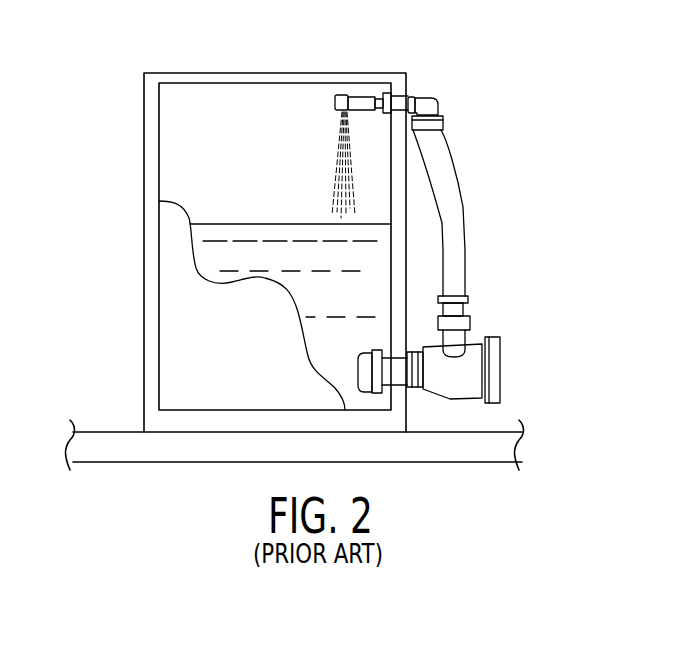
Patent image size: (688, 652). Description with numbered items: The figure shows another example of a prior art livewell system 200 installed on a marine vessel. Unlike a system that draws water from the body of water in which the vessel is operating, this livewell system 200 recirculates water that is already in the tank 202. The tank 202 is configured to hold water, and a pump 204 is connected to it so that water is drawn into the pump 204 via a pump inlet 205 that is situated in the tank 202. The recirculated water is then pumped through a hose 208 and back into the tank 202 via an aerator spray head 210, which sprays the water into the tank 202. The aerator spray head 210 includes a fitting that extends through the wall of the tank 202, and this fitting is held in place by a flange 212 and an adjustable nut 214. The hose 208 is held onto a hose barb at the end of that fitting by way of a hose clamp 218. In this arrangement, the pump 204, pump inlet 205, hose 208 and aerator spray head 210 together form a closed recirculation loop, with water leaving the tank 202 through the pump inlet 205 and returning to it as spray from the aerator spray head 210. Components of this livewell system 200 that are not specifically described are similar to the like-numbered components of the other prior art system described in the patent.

The livewell system 200 is at (483, 63).
The tank 202 is at (143, 322).
The pump 204 is at (460, 373).
The pump inlet 205 is at (359, 368).
The hose 208 is at (467, 236).
The aerator spray head 210 is at (362, 93).
The flange 212 is at (410, 97).
The adjustable nut 214 is at (386, 91).
The hose clamp 218 is at (445, 124).